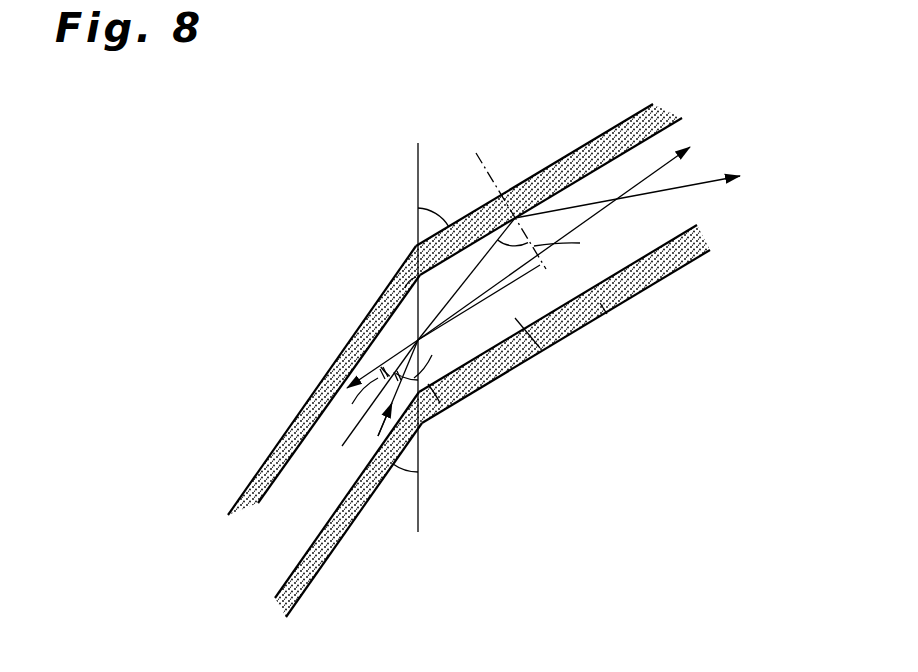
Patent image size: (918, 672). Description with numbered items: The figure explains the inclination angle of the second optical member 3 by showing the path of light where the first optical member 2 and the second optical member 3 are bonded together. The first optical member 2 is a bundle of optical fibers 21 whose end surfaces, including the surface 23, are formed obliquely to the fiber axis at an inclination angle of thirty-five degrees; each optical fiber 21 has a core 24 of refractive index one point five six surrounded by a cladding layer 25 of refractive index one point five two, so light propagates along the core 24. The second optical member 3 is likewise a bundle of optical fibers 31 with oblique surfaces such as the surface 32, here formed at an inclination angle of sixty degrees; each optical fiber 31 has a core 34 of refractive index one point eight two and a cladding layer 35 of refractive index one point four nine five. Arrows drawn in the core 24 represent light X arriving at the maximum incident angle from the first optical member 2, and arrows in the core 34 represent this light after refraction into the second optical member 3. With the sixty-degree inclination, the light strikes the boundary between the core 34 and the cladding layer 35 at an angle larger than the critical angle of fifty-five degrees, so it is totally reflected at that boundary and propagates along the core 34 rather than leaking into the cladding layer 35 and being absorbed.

The first optical member 2 is at (456, 422).
The second optical member 3 is at (455, 283).
The optical fiber 21 is at (347, 347).
The surface 23 is at (430, 385).
The core 24 is at (321, 519).
The cladding layer 25 is at (335, 550).
The optical fiber 31 is at (664, 290).
The surface 32 is at (398, 288).
The core 34 is at (540, 348).
The cladding layer 35 is at (607, 314).